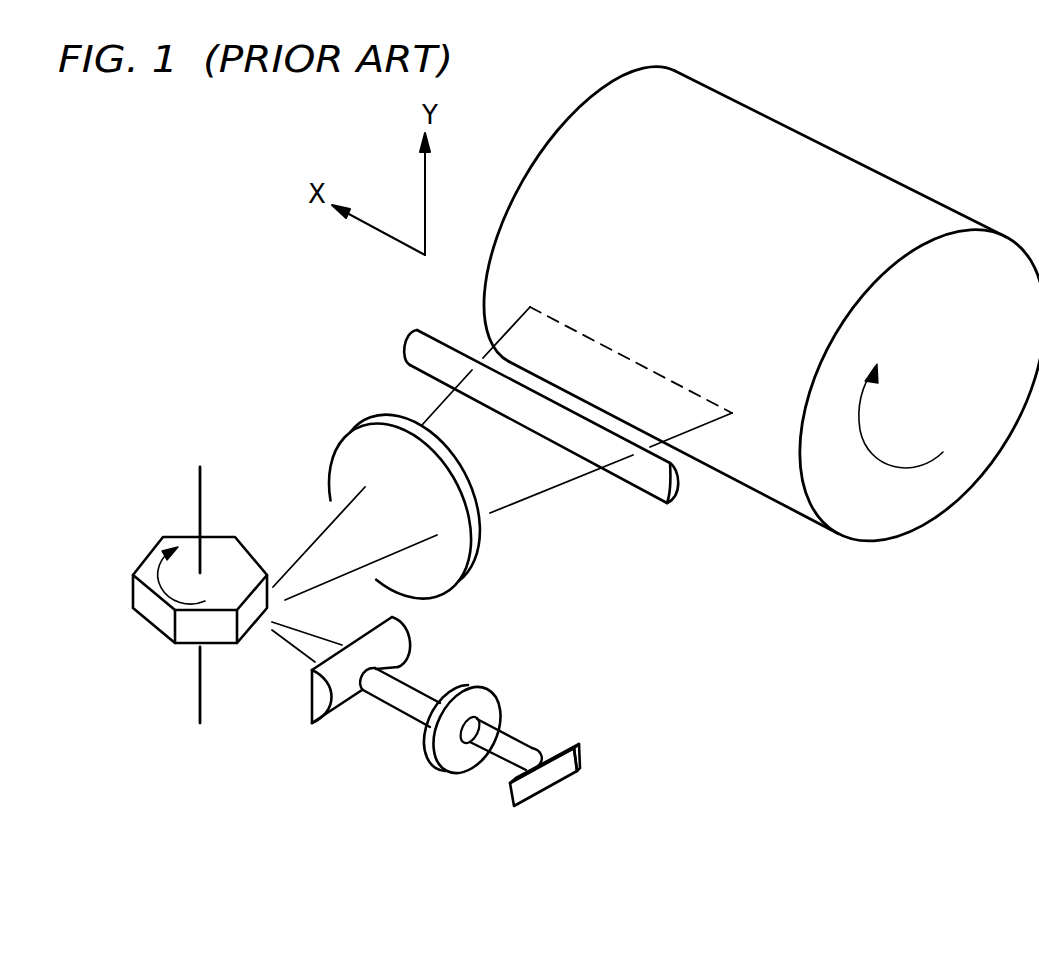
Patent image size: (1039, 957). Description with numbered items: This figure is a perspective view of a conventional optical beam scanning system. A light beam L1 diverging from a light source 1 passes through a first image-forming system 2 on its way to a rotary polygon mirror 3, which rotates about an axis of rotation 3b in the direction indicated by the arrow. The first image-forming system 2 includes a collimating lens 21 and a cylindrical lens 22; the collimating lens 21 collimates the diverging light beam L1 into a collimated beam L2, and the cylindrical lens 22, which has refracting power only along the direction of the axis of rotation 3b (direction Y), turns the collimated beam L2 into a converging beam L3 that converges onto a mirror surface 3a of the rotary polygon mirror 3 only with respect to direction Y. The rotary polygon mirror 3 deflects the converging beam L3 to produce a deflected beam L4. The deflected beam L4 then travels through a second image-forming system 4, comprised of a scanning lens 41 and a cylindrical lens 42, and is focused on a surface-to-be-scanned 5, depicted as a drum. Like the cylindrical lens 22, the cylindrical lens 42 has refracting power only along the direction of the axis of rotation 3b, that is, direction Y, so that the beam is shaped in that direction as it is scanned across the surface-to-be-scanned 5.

The light source 1 is at (508, 794).
The first image-forming system 2 is at (380, 731).
The collimating lens 21 is at (427, 748).
The cylindrical lens 22 is at (317, 698).
The rotary polygon mirror 3 is at (177, 575).
The mirror surface 3a is at (250, 620).
The axis of rotation 3b is at (200, 485).
The second image-forming system 4 is at (478, 442).
The scanning lens 41 is at (360, 442).
The cylindrical lens 42 is at (523, 399).
The surface-to-be-scanned 5 is at (756, 469).
The light beam L1 is at (510, 732).
The collimated beam L2 is at (420, 688).
The converging beam L3 is at (308, 630).
The deflected beam L4 is at (310, 543).